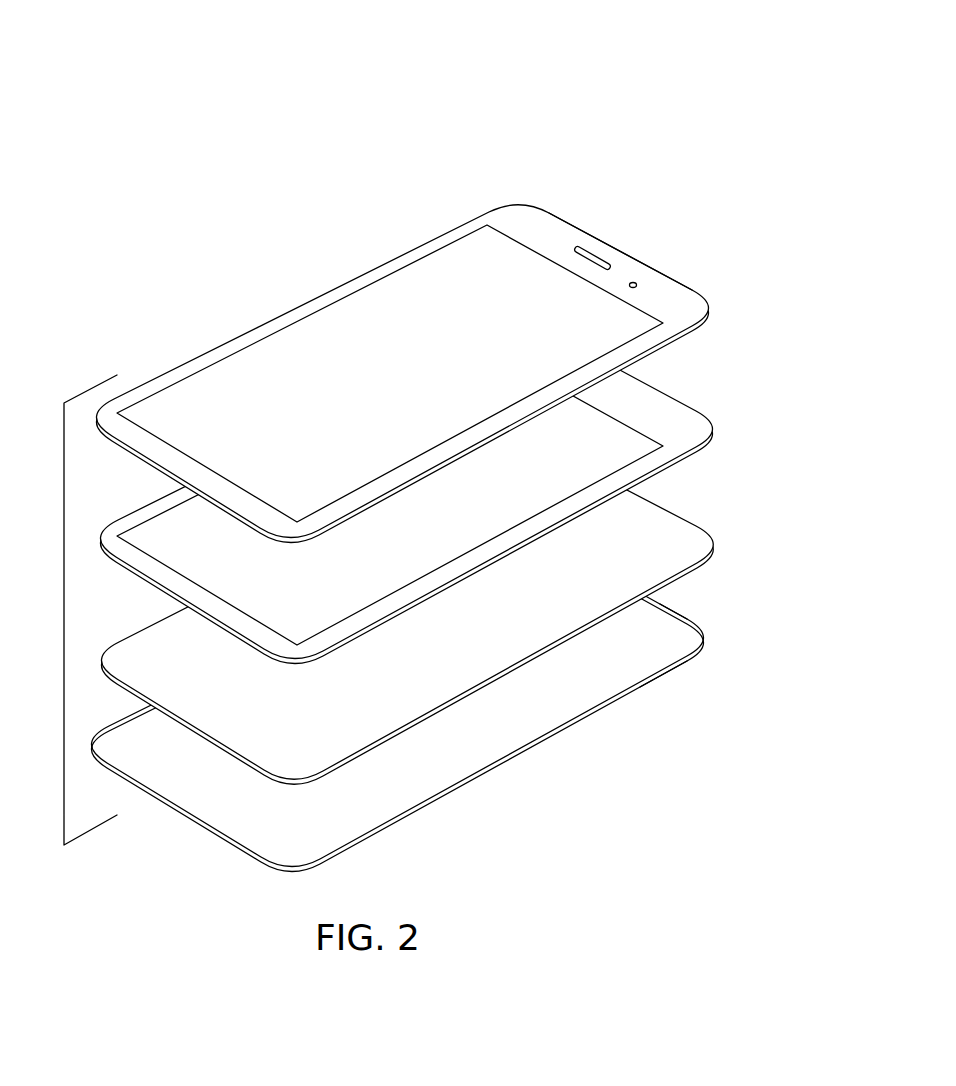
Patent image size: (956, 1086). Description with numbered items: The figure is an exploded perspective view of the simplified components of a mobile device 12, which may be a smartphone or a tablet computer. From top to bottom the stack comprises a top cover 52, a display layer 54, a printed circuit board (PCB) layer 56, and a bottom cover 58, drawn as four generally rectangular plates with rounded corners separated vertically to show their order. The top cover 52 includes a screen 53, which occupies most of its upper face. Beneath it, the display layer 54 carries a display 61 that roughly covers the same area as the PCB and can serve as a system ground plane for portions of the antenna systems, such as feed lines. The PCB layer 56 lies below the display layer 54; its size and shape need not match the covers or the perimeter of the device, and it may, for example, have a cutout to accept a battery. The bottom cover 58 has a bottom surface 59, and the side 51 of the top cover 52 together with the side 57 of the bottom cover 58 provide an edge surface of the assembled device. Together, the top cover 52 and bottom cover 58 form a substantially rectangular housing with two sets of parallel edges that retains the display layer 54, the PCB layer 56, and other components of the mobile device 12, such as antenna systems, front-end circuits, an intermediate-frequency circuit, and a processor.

The mobile device 12 is at (441, 442).
The side 51 is at (456, 374).
The top cover 52 is at (668, 277).
The screen 53 is at (390, 373).
The display layer 54 is at (453, 495).
The display 61 is at (390, 496).
The printed circuit board (PCB) layer 56 is at (700, 527).
The side 57 is at (695, 654).
The bottom cover 58 is at (499, 762).
The bottom surface 59 is at (641, 688).